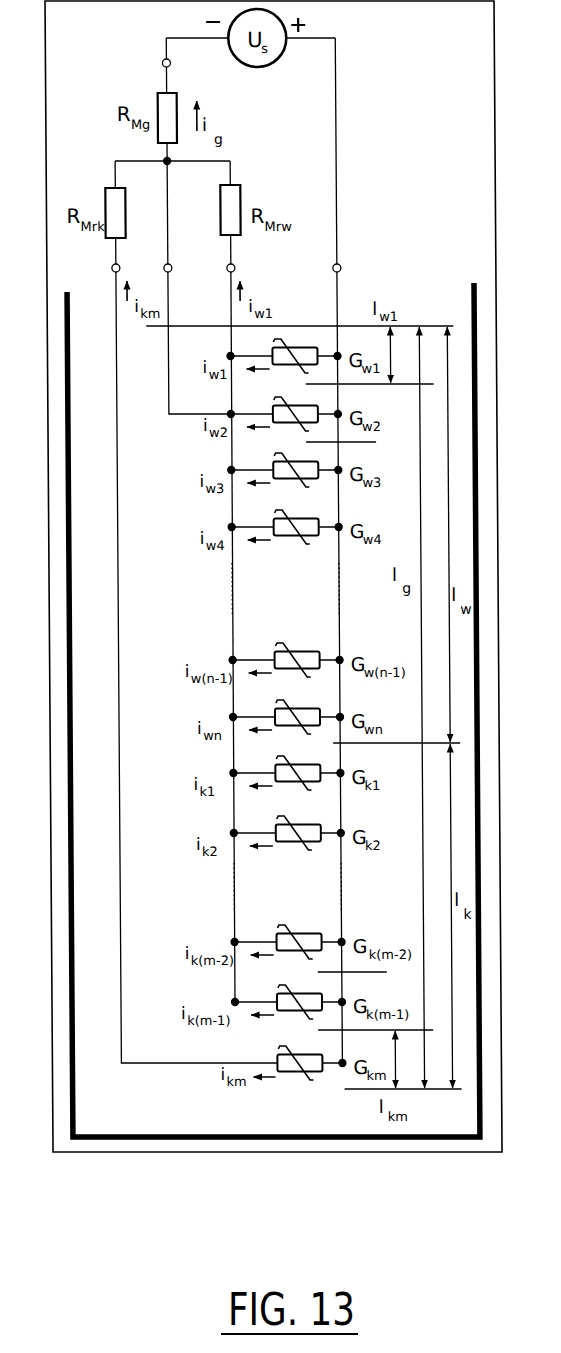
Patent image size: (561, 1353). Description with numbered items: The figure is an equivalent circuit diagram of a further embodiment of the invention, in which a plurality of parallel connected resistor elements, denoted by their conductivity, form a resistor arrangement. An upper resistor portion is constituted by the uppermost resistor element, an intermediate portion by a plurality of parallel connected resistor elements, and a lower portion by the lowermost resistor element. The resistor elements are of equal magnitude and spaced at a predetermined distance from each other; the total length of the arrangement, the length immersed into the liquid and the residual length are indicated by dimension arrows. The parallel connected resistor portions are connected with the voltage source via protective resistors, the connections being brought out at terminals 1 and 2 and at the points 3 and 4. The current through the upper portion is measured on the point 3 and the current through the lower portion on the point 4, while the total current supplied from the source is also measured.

The terminal 1 (positive supply connection to common bus) 1 is at (349, 550).
The terminal 2 (common measuring resistor connection) 2 is at (197, 337).
The measuring point 3 is at (244, 631).
The measuring point 4 is at (195, 661).